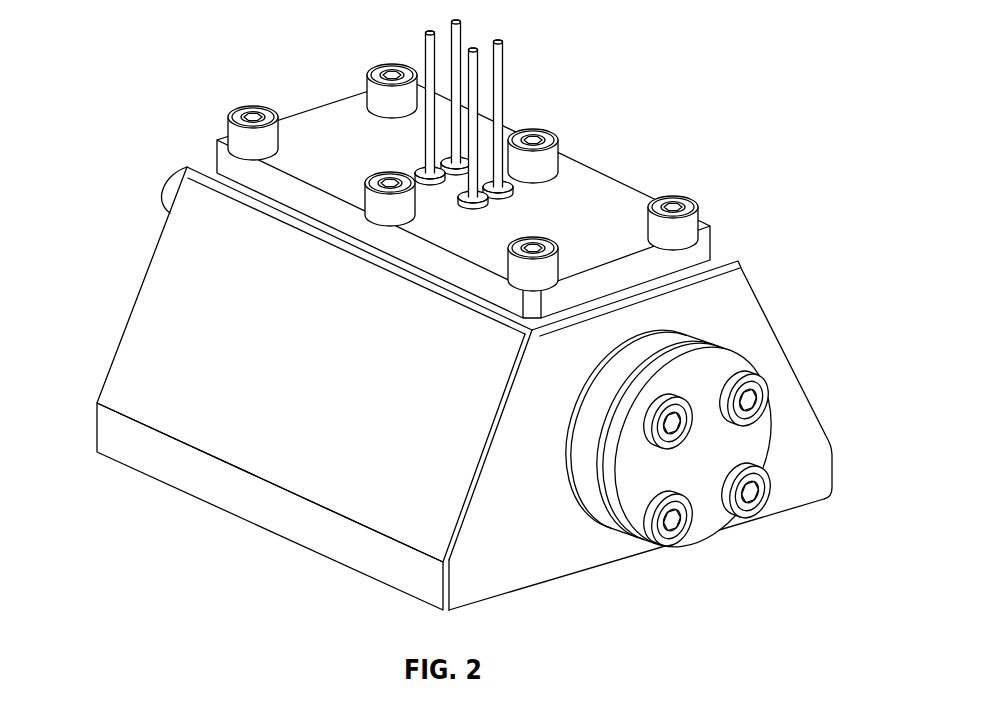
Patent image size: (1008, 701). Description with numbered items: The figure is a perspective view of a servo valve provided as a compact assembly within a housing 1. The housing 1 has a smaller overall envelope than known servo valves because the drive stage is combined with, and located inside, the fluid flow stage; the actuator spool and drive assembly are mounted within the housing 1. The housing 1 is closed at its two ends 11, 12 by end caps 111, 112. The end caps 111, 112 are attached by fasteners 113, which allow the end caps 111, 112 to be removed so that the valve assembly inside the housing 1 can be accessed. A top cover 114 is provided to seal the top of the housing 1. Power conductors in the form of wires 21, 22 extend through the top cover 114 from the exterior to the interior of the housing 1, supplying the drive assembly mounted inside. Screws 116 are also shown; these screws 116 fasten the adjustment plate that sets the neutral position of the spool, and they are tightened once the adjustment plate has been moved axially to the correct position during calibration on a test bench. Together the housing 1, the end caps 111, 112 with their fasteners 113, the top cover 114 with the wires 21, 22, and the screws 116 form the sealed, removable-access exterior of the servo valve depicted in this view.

The housing 1 is at (248, 507).
The end of housing 11 is at (100, 354).
The end cap 111 is at (143, 270).
The end cap 112 is at (700, 368).
The fasteners 113 is at (752, 402).
The top cover 114 is at (232, 162).
The screws 116 is at (700, 213).
The end of housing 12 is at (812, 483).
The wire 21 is at (427, 47).
The wire 22 is at (489, 106).